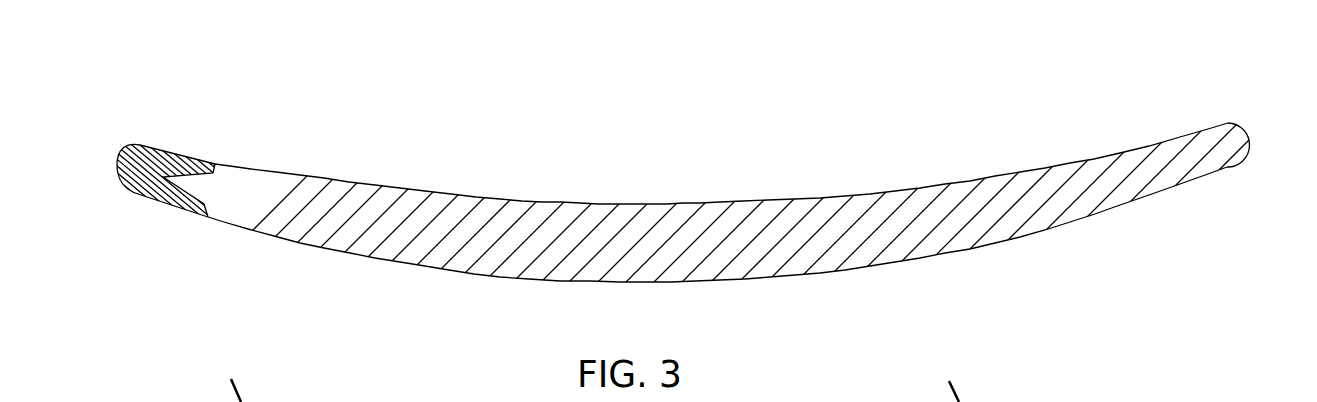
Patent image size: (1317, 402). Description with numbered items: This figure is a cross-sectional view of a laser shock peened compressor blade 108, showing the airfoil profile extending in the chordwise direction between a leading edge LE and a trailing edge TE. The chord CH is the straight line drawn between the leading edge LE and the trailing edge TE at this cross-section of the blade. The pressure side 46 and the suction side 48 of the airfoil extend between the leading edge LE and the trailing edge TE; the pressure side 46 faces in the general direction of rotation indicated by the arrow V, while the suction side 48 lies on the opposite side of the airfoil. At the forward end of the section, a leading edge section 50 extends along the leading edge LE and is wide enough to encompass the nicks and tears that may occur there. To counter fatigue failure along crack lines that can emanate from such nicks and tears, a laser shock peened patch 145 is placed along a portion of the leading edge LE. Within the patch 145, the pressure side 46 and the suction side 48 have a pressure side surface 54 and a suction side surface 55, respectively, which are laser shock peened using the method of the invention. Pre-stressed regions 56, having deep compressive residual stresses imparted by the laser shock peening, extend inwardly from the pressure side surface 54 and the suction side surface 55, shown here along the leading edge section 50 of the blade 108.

The compressor blade 108 is at (771, 157).
The pressure side 46 is at (543, 201).
The suction side 48 is at (325, 248).
The laser shock peened patch 145 is at (159, 132).
The pressure side surface 54 is at (180, 156).
The leading edge section 50 is at (112, 172).
The suction side surface 55 is at (158, 201).
The pre-stressed regions 56 is at (204, 163).
The leading edge LE is at (115, 163).
The trailing edge TE is at (1249, 137).
The chord CH is at (1249, 128).
The arrow indicating direction of rotation V is at (358, 137).